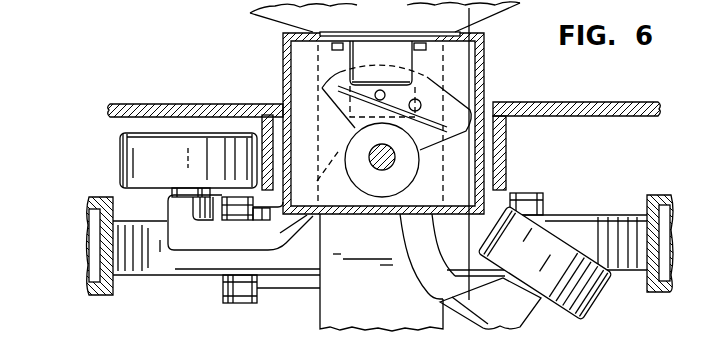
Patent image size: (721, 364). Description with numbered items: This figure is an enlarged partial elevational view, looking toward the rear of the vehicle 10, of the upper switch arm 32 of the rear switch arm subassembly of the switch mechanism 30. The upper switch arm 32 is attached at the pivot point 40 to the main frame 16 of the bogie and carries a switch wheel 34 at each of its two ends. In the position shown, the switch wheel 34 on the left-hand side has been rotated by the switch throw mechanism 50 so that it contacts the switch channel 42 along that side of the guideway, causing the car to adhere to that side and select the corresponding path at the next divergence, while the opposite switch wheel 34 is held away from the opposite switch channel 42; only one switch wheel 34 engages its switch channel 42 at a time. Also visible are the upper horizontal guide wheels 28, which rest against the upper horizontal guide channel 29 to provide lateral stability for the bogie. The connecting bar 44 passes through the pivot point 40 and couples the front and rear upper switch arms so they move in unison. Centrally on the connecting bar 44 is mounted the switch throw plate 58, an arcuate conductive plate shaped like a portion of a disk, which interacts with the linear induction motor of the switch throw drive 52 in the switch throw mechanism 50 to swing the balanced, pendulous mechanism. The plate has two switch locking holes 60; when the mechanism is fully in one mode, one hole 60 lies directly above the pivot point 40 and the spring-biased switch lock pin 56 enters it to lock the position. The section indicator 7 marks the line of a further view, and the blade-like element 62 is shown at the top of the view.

The vehicle 10 is at (244, 23).
The section line 7- 7 is at (469, 14).
The main frame member 16 is at (328, 310).
The upper horizontal guide wheels 28 is at (133, 270).
The upper horizontal guide channel 29 is at (92, 197).
The switch mechanism 30 is at (200, 262).
The upper switch arm 32 is at (420, 240).
The switch wheels 34 is at (127, 148).
The pivot point 40 is at (379, 164).
The switch channel 42 is at (172, 103).
The connecting bar 44 is at (370, 155).
The switch throw mechanism 50 is at (495, 80).
The switch throw drive 52 is at (357, 61).
The switch lock pin 56 is at (380, 90).
The switch throw plate 58 is at (322, 90).
The switch locking holes 60 is at (421, 101).
The blade 62 is at (406, 16).